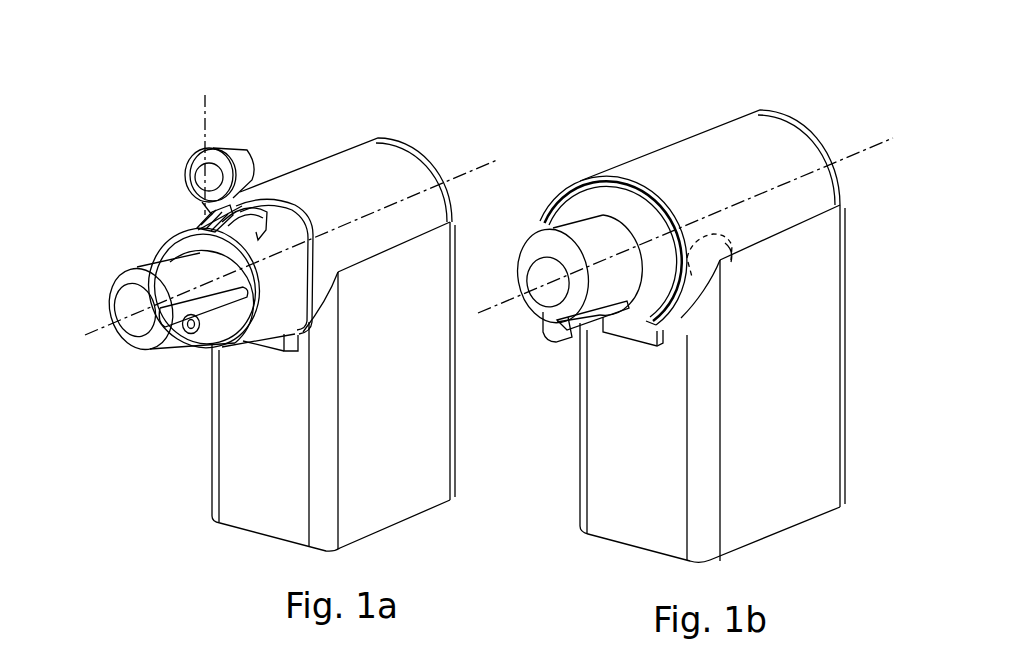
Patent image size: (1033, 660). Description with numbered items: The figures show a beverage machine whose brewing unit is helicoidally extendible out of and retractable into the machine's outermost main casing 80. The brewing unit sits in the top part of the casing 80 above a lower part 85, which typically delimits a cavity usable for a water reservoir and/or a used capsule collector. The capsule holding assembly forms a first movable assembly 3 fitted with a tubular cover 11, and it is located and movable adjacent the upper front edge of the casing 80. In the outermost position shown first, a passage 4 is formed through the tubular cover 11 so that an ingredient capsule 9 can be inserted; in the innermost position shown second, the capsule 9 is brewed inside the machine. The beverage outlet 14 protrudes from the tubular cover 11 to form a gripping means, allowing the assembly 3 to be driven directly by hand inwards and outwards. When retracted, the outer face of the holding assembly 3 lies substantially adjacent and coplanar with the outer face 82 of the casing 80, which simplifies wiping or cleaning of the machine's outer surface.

In FIG. 1A, the first movable assembly 3 is at (127, 232).
In FIG. 1A, the passage 4 is at (215, 220).
In FIG. 1B, the passage 4 is at (707, 247).
In FIG. 1A, the ingredient capsule 9 is at (245, 167).
In FIG. 1A, the tubular cover 11 is at (128, 288).
In FIG. 1B, the tubular cover 11 is at (542, 253).
In FIG. 1A, the beverage outlet 14 is at (190, 327).
In FIG. 1B, the beverage outlet 14 is at (550, 333).
In FIG. 1A, the main casing 80 is at (337, 170).
In FIG. 1B, the main casing 80 is at (737, 142).
In FIG. 1B, the outer face 82 is at (623, 357).
In FIG. 1A, the lower part 85 is at (237, 470).
In FIG. 1B, the lower part 85 is at (603, 478).